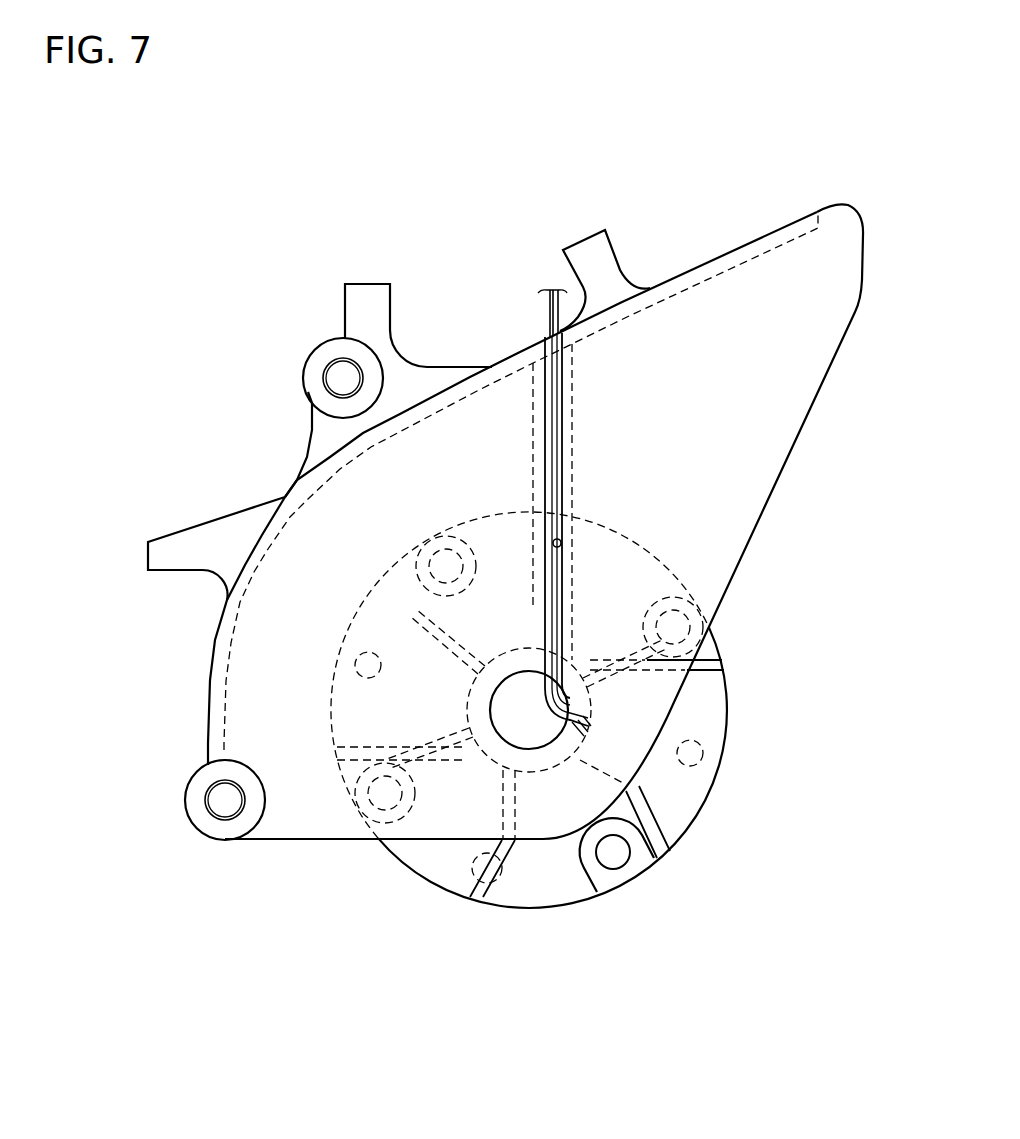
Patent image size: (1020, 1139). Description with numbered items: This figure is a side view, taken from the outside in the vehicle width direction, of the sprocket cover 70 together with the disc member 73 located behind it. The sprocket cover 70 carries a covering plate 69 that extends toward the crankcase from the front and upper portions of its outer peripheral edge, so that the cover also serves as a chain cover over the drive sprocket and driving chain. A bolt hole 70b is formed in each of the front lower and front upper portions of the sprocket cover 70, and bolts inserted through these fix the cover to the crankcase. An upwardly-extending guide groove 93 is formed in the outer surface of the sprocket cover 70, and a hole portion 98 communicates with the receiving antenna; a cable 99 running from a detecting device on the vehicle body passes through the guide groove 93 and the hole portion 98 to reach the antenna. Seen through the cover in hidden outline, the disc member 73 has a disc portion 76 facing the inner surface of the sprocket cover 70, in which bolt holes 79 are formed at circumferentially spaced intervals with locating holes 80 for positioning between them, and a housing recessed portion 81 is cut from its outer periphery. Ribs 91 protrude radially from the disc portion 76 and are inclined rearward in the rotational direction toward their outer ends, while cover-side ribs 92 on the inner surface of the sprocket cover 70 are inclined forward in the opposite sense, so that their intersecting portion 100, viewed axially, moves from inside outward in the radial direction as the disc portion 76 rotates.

The sprocket cover 70 is at (738, 280).
The bolt hole 70b is at (340, 382).
The covering plate 69 is at (292, 482).
The cable 99 is at (552, 422).
The housing recessed portion 81 is at (490, 537).
The guide groove 93 is at (559, 540).
The locating hole 80 is at (366, 658).
The intersecting portion 100 is at (390, 727).
The rib 91 is at (703, 663).
The cover-side rib 92 is at (637, 683).
The disc portion 76 is at (683, 803).
The bolt hole 79 is at (366, 820).
The hole portion 98 is at (566, 760).
The disc member 73 is at (417, 893).